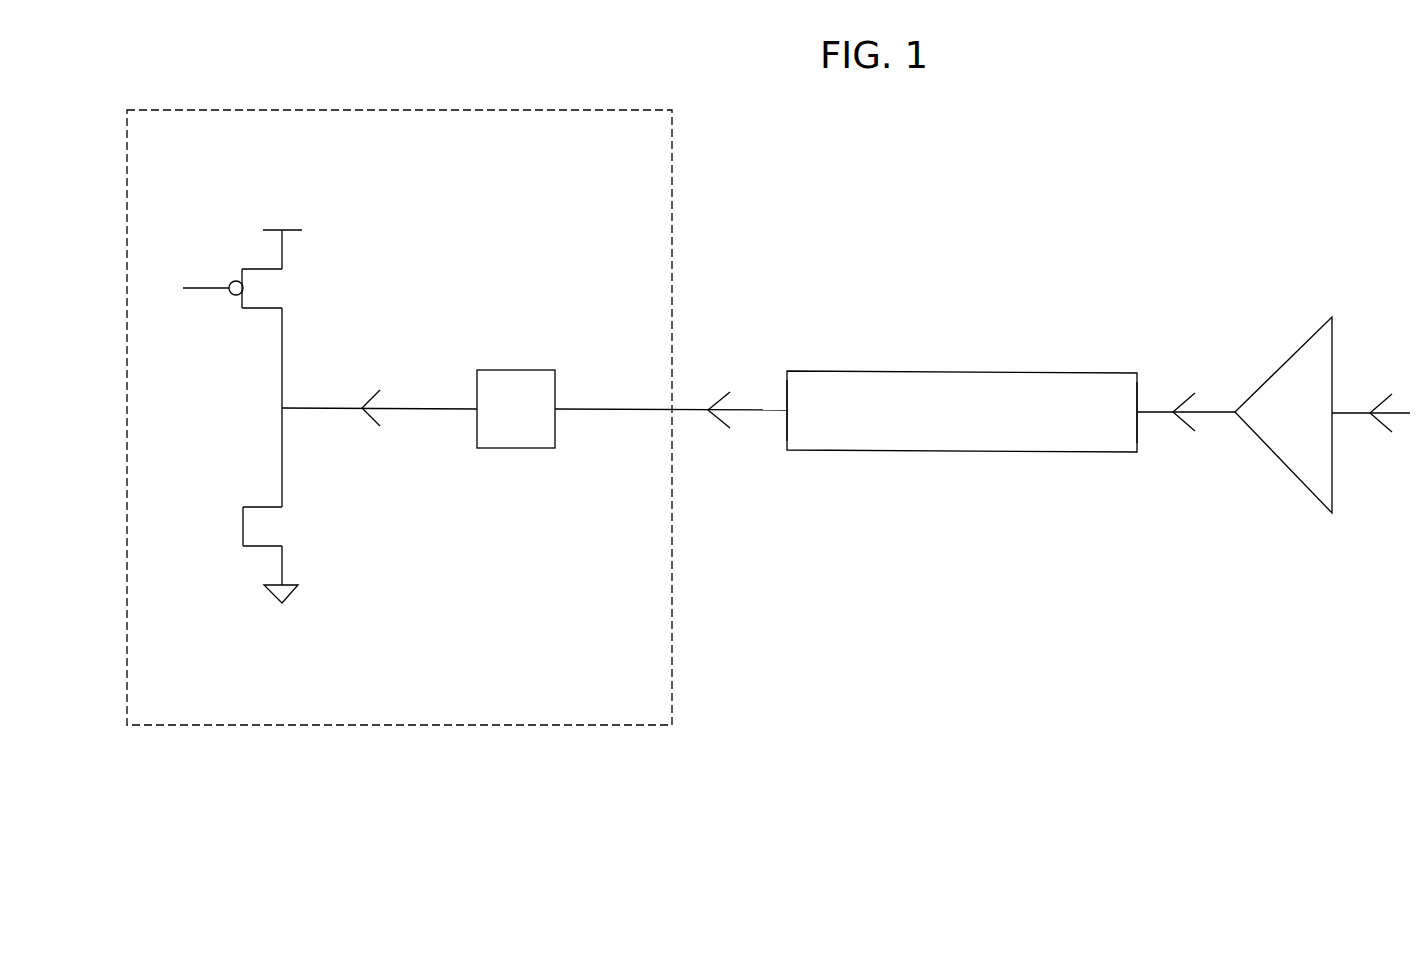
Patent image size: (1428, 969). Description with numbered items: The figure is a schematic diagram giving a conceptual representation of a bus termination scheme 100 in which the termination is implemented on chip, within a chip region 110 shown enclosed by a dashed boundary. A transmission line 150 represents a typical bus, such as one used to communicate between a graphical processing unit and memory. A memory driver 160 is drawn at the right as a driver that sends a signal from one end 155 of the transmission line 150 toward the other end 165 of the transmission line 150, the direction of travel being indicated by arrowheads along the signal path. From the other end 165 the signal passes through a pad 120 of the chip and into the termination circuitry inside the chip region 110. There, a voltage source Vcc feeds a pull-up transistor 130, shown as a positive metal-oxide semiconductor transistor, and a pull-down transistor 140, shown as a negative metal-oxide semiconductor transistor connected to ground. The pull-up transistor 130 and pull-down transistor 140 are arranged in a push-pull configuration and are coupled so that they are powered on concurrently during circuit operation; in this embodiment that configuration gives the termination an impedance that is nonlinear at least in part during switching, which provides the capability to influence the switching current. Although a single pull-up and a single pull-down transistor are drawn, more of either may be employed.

The system 100 is at (862, 863).
The integrated circuit power domain 110 is at (357, 725).
The pad 120 is at (512, 370).
The pull-up transistor 130 is at (258, 310).
The pull-down transistor 140 is at (258, 506).
The transmission line 150 is at (857, 450).
The one end of transmission line 155 is at (1140, 443).
The memory driver 160 is at (1288, 358).
The another end of transmission line 165 is at (785, 380).